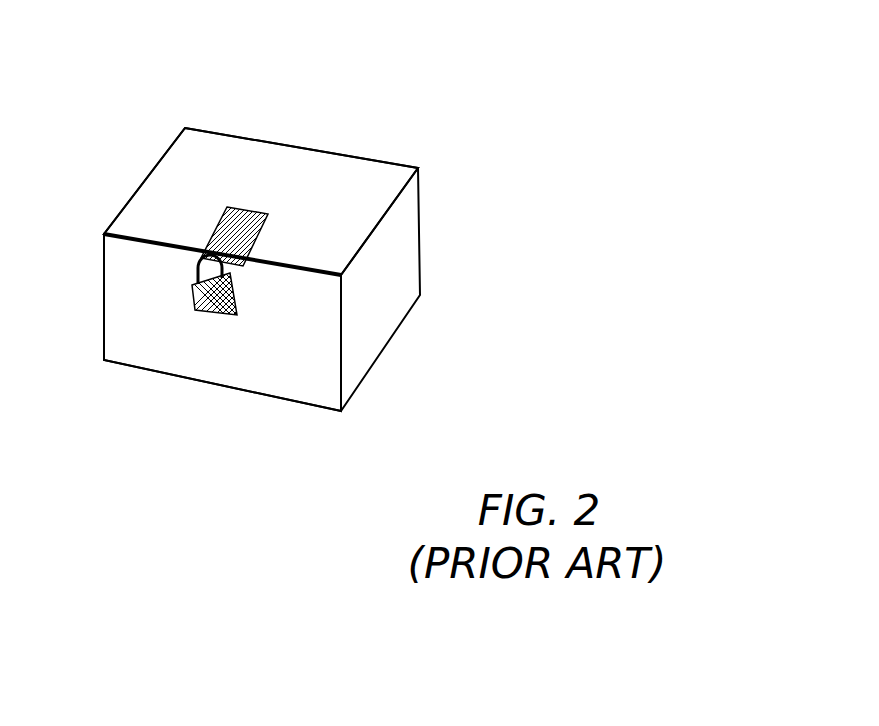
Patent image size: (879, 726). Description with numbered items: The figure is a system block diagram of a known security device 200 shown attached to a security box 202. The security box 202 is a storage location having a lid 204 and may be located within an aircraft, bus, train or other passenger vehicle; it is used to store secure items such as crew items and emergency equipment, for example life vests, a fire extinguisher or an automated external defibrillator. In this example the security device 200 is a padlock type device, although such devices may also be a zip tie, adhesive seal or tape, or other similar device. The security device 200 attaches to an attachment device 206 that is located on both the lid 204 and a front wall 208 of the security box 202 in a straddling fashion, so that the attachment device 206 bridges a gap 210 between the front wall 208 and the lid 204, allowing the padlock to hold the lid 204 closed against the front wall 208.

The security device 200 is at (207, 313).
The security box 202 is at (378, 122).
The lid 204 is at (261, 201).
The attachment device 206 is at (227, 233).
The front wall 208 is at (222, 322).
The gap 210 is at (121, 232).